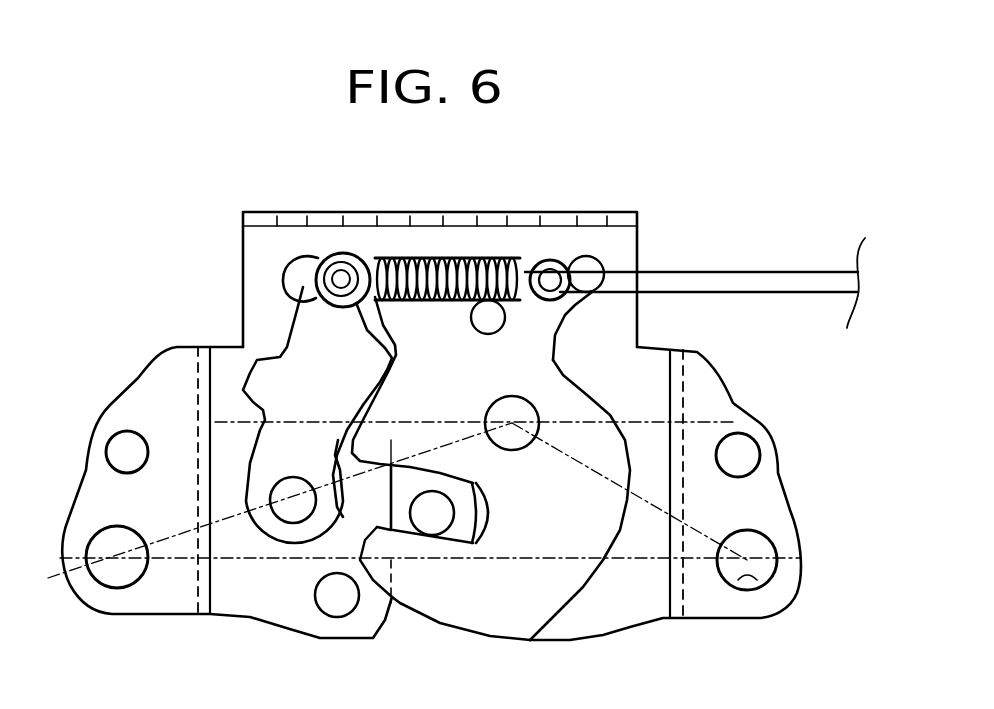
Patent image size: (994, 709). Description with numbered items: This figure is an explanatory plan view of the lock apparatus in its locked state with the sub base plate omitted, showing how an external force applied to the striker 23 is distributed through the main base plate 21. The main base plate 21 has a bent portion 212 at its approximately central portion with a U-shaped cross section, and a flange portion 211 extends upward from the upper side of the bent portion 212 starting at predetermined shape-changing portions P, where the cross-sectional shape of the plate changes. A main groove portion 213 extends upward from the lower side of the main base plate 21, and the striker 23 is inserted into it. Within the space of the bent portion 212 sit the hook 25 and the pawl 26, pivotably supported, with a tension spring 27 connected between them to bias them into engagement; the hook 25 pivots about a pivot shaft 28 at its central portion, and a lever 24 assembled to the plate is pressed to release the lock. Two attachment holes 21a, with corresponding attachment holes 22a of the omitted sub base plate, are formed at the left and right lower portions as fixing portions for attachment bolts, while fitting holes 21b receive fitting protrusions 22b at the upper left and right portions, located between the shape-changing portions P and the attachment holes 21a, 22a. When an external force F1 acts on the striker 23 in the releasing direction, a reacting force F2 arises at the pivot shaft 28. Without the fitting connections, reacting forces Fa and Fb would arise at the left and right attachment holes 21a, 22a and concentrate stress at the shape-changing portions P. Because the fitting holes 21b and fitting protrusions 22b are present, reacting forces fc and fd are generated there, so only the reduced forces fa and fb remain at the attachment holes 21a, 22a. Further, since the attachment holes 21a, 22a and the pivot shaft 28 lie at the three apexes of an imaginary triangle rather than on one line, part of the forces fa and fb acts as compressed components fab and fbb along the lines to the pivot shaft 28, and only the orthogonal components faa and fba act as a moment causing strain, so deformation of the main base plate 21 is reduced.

The main base plate 21 is at (608, 617).
The flange portion 211 is at (277, 235).
The bent portion 212 is at (270, 600).
The main base plate groove portion 213 is at (377, 640).
The attachment holes 21a is at (416, 513).
The attachment holes 22a is at (137, 403).
The fitting holes 21b is at (441, 441).
The fitting protrusions 22b is at (107, 457).
The striker 23 is at (423, 515).
The lever 24 is at (703, 270).
The hook 25 is at (520, 603).
The pawl 26 is at (317, 323).
The tension spring 27 is at (420, 257).
The pivot shaft 28 is at (520, 450).
The shape-changing portions P is at (237, 343).
The external force F1 is at (432, 505).
The reacting force F2 is at (512, 423).
The reacting force Fa is at (117, 557).
The reacting force Fb is at (747, 560).
The reacting force fa is at (133, 410).
The reacting force fb is at (740, 418).
The reacting force fc is at (130, 428).
The reacting force fd is at (741, 440).
The reacting force component faa is at (109, 540).
The compressed reacting force fab is at (128, 552).
The reacting force component fba is at (761, 549).
The compressed reacting force fbb is at (739, 543).